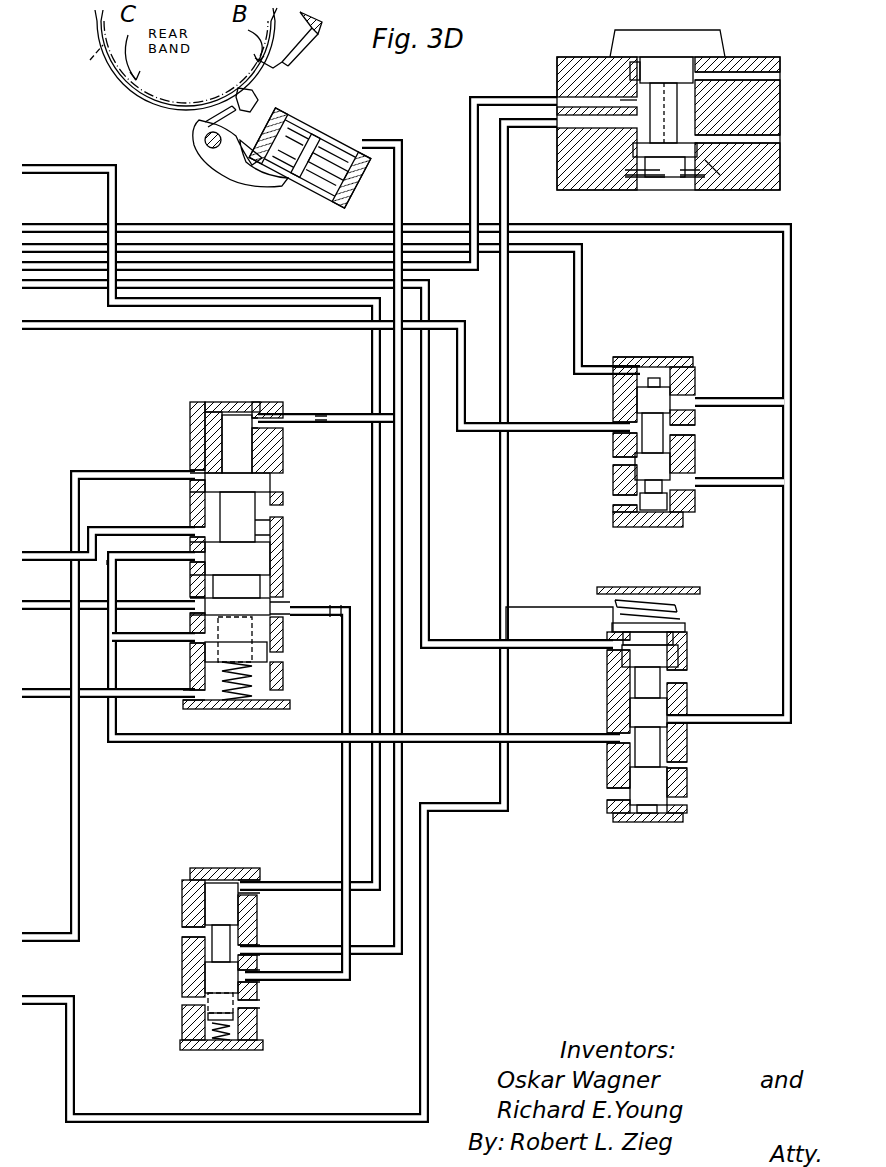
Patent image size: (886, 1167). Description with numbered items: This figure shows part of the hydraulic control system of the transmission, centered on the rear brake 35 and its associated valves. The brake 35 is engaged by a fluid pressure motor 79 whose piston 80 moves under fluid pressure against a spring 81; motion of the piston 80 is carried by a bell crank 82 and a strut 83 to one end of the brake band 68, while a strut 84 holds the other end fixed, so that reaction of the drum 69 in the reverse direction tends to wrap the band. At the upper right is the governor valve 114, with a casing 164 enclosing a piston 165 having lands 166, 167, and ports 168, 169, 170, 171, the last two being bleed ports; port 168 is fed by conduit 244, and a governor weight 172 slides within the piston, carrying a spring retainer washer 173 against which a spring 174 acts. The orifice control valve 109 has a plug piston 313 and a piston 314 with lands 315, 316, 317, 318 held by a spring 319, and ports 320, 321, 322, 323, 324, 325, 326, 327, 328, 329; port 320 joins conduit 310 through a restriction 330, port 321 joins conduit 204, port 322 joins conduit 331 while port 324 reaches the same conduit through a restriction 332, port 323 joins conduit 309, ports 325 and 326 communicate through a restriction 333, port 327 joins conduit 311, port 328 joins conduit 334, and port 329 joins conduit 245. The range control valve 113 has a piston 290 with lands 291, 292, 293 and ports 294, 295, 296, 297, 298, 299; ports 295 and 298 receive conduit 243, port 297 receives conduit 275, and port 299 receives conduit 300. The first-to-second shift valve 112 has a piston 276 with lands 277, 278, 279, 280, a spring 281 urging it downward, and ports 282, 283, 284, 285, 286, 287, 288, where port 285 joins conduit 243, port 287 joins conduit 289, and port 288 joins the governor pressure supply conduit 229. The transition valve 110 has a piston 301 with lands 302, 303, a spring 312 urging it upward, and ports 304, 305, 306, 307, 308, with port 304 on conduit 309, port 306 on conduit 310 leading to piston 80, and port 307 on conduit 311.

The brake 35 is at (153, 66).
The brake band 68 is at (143, 94).
The drum 69 is at (100, 70).
The fluid pressure motor 79 is at (320, 138).
The piston 80 is at (305, 136).
The spring 81 is at (328, 178).
The bell crank 82 is at (222, 172).
The strut 83 is at (216, 112).
The strut 84 is at (292, 64).
The governor valve 114 is at (625, 114).
The casing 164 is at (578, 64).
The piston 165 is at (596, 176).
The land 166 is at (666, 100).
The land 167 is at (600, 150).
The port 168 is at (632, 64).
The port 169 is at (560, 140).
The port 170 is at (720, 150).
The port 171 is at (730, 68).
The governor weight 172 is at (665, 27).
The spring retainer washer 173 is at (640, 178).
The spring 174 is at (698, 178).
The conduit 243 is at (65, 230).
The conduit 244 is at (468, 124).
The governor pressure supply conduit 229 is at (500, 506).
The conduit 300 is at (540, 251).
The conduit 275 is at (74, 329).
The conduit 289 is at (87, 287).
The conduit 309 is at (85, 165).
The conduit 310 is at (404, 208).
The conduit 311 is at (341, 782).
The restriction 330 is at (325, 424).
The conduit 331 is at (44, 552).
The restriction 332 is at (134, 563).
The restriction 333 is at (338, 612).
The conduit 334 is at (203, 743).
The conduit 245 is at (46, 698).
The conduit 204 is at (80, 842).
The orifice control valve 109 is at (233, 546).
The piston 313 is at (222, 437).
The piston 314 is at (264, 514).
The land 315 is at (272, 482).
The land 316 is at (272, 540).
The land 317 is at (270, 600).
The land 318 is at (262, 650).
The spring 319 is at (240, 702).
The port 320 is at (262, 422).
The port 321 is at (195, 478).
The port 322 is at (195, 532).
The port 323 is at (270, 562).
The port 324 is at (183, 562).
The port 325 is at (284, 610).
The port 326 is at (270, 650).
The port 327 is at (192, 614).
The port 328 is at (192, 642).
The port 329 is at (190, 702).
The range control valve 113 is at (674, 410).
The piston 290 is at (682, 432).
The land 291 is at (672, 505).
The land 292 is at (640, 470).
The land 293 is at (640, 396).
The port 294 is at (630, 510).
The port 295 is at (680, 482).
The port 296 is at (625, 460).
The port 297 is at (625, 428).
The port 298 is at (692, 402).
The port 299 is at (636, 360).
The 1-2 shift valve 112 is at (631, 731).
The valve piston 276 is at (628, 794).
The land 277 is at (638, 782).
The land 278 is at (640, 710).
The land 279 is at (670, 657).
The land 280 is at (690, 630).
The spring 281 is at (662, 600).
The port 282 is at (672, 803).
The port 283 is at (680, 766).
The port 284 is at (618, 740).
The port 285 is at (680, 722).
The port 286 is at (690, 682).
The port 287 is at (600, 648).
The port 288 is at (600, 605).
The transition valve 110 is at (239, 979).
The valve piston 301 is at (200, 960).
The land 302 is at (210, 902).
The land 303 is at (205, 1003).
The port 304 is at (270, 868).
The port 305 is at (190, 928).
The port 306 is at (250, 950).
The port 307 is at (258, 975).
The port 308 is at (262, 1003).
The spring 312 is at (218, 1042).